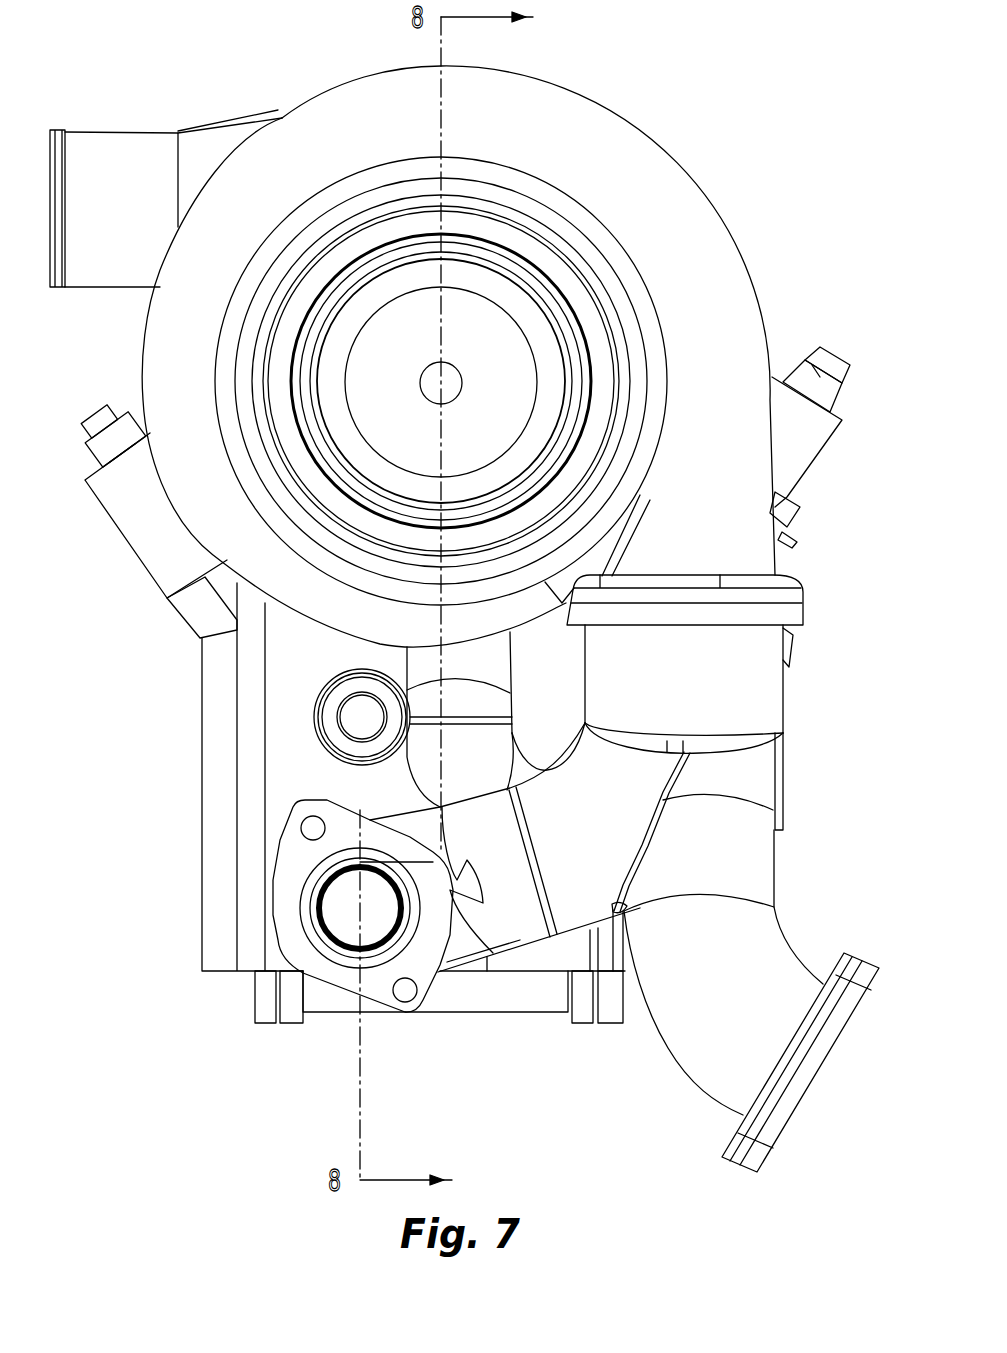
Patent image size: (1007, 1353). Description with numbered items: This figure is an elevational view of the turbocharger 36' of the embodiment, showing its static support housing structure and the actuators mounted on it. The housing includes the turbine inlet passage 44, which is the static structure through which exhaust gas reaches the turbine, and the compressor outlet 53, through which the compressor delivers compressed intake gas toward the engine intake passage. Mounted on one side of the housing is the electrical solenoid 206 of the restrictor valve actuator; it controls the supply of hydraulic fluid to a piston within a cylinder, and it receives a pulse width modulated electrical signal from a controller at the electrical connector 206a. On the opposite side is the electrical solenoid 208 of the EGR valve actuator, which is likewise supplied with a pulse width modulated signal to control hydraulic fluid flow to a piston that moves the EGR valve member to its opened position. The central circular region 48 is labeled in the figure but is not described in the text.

The turbocharger 36' is at (472, 544).
The turbine wheel / inlet bore 48 is at (543, 337).
The compressor outlet 53 is at (100, 157).
The electrical solenoid 206 is at (790, 437).
The electrical connector 206a is at (798, 542).
The electrical solenoid 208 is at (143, 500).
The turbine inlet passage 44 is at (741, 987).